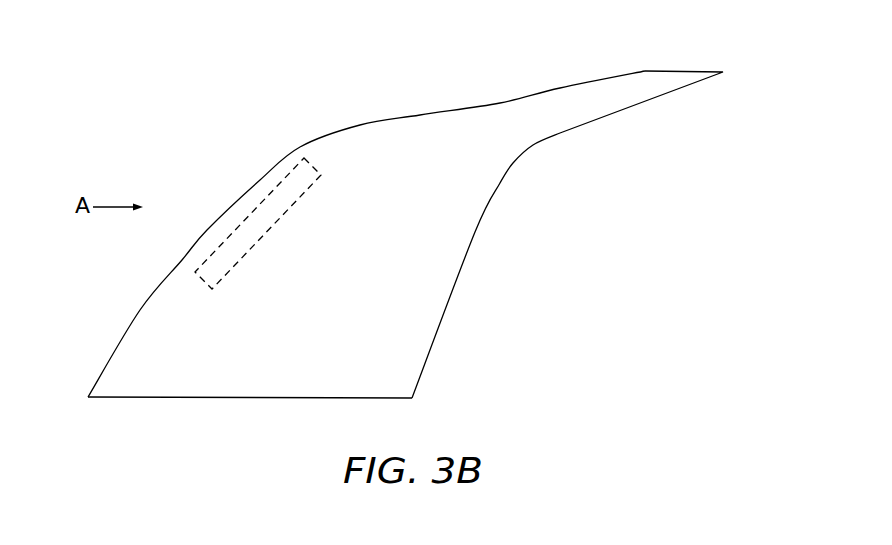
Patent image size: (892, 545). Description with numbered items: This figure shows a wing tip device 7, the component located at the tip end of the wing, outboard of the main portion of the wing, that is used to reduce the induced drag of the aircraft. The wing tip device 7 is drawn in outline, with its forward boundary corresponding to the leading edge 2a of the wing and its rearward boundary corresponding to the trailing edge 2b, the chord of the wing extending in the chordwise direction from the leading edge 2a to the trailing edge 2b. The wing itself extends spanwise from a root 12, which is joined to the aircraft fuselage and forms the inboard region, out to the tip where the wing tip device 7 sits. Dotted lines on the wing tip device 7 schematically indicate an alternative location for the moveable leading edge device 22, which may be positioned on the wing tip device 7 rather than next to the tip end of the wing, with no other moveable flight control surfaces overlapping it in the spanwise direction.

The wing tip device 7 is at (252, 128).
The root 12 is at (305, 145).
The leading edge device 22 is at (262, 218).
The leading edge 2a is at (140, 311).
The trailing edge 2b is at (420, 369).